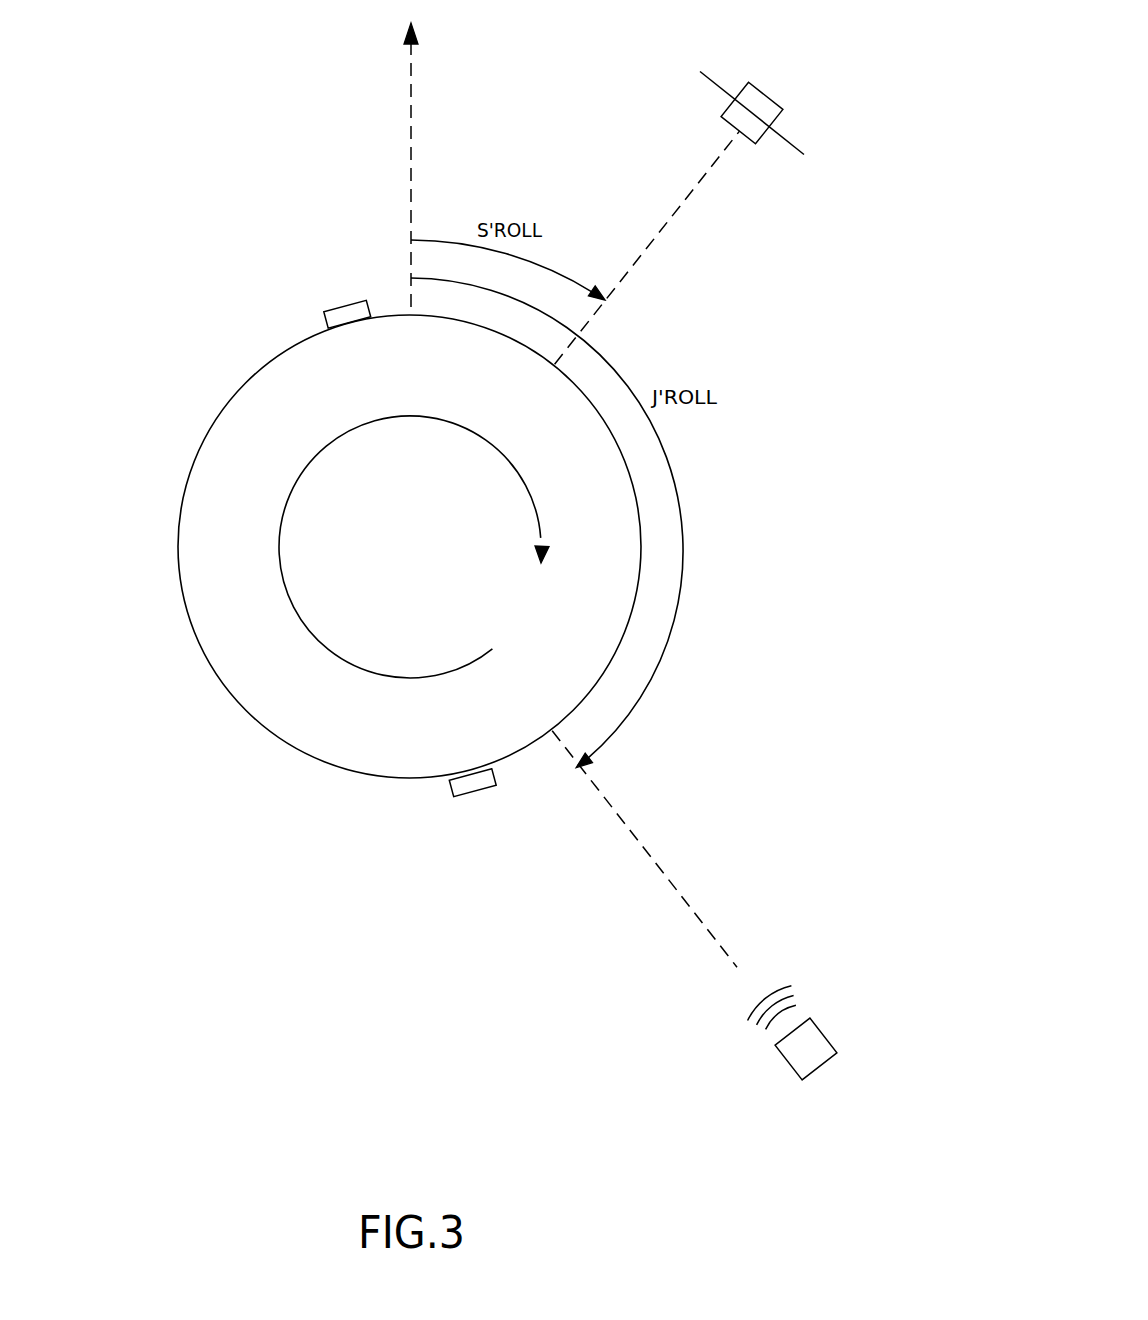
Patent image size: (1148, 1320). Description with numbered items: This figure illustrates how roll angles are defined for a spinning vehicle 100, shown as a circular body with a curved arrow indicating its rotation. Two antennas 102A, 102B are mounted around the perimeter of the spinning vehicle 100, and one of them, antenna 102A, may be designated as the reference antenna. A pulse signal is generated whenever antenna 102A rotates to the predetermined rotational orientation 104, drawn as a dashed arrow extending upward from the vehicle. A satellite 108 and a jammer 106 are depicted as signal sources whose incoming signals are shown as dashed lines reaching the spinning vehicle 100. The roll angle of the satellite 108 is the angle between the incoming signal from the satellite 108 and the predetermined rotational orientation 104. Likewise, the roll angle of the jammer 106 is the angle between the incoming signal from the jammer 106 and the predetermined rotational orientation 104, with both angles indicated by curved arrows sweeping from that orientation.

The spinning vehicle 100 is at (180, 545).
The antenna 102A is at (346, 300).
The antenna 102B is at (478, 797).
The predetermined rotational orientation 104 is at (411, 143).
The jammer 106 is at (826, 1031).
The satellite 108 is at (766, 96).